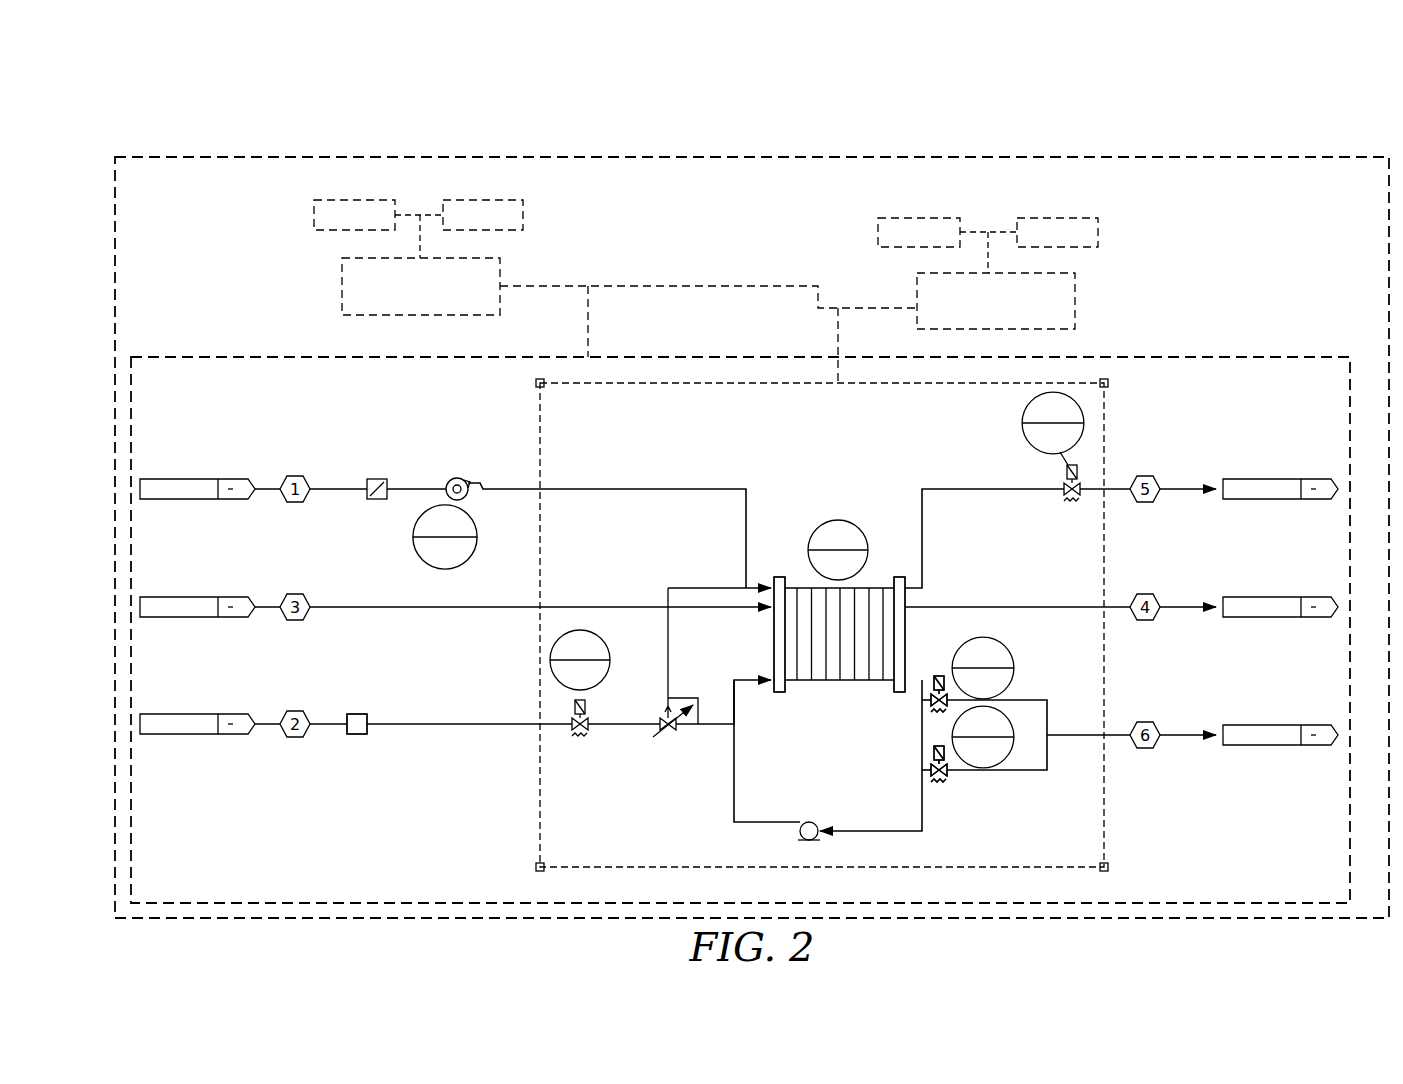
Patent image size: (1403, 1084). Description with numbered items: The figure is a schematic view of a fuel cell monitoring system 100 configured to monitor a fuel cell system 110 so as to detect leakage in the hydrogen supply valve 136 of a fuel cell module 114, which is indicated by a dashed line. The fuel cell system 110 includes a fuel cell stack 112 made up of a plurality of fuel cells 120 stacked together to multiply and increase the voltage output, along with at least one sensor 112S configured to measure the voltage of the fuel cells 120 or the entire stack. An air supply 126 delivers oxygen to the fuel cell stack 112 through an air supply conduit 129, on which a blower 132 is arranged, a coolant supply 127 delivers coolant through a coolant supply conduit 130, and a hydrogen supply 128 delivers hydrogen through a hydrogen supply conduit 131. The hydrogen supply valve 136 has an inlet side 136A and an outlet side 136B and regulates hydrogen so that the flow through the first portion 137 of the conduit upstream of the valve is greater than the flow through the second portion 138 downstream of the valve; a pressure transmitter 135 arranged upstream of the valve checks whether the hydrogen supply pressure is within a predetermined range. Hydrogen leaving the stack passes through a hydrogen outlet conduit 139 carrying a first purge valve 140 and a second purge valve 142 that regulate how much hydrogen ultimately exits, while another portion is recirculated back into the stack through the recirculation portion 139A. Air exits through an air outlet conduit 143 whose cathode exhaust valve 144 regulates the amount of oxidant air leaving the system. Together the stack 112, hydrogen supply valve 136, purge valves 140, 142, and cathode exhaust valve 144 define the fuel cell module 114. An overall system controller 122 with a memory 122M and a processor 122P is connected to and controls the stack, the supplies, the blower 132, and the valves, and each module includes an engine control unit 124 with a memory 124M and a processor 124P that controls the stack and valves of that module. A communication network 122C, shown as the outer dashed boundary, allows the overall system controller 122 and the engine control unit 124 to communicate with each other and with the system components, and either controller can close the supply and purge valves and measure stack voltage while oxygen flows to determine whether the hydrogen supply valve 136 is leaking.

The fuel cell monitoring system 100 is at (215, 108).
The fuel cell system 110 is at (210, 350).
The fuel cell stack 112 is at (838, 512).
The sensor 112S is at (878, 577).
The fuel cell module 114 is at (538, 426).
The fuel cells 120 is at (796, 577).
The overall system controller 122 is at (342, 301).
The communication network 122C is at (1105, 157).
The memory 122M is at (314, 218).
The processor 122P is at (523, 203).
The engine control unit 124 is at (917, 288).
The memory 124M is at (878, 220).
The processor 124P is at (1098, 220).
The air supply 126 is at (192, 478).
The coolant supply 127 is at (192, 597).
The hydrogen supply 128 is at (192, 714).
The air supply conduit 129 is at (522, 495).
The coolant supply conduit 130 is at (432, 610).
The hydrogen supply conduit 131 is at (360, 740).
The blower 132 is at (455, 476).
The pressure transmitter 135 is at (350, 714).
The hydrogen supply valve 136 is at (579, 706).
The inlet side 136A is at (565, 729).
The outlet side 136B is at (598, 735).
The first portion of hydrogen supply conduit 137 is at (487, 722).
The second portion of hydrogen supply conduit 138 is at (641, 722).
The hydrogen outlet conduit 139 is at (920, 693).
The recirculation portion 139A is at (885, 827).
The first purge valve 140 is at (943, 790).
The second purge valve 142 is at (939, 666).
The air outlet conduit 143 is at (945, 487).
The cathode exhaust valve 144 is at (1069, 508).